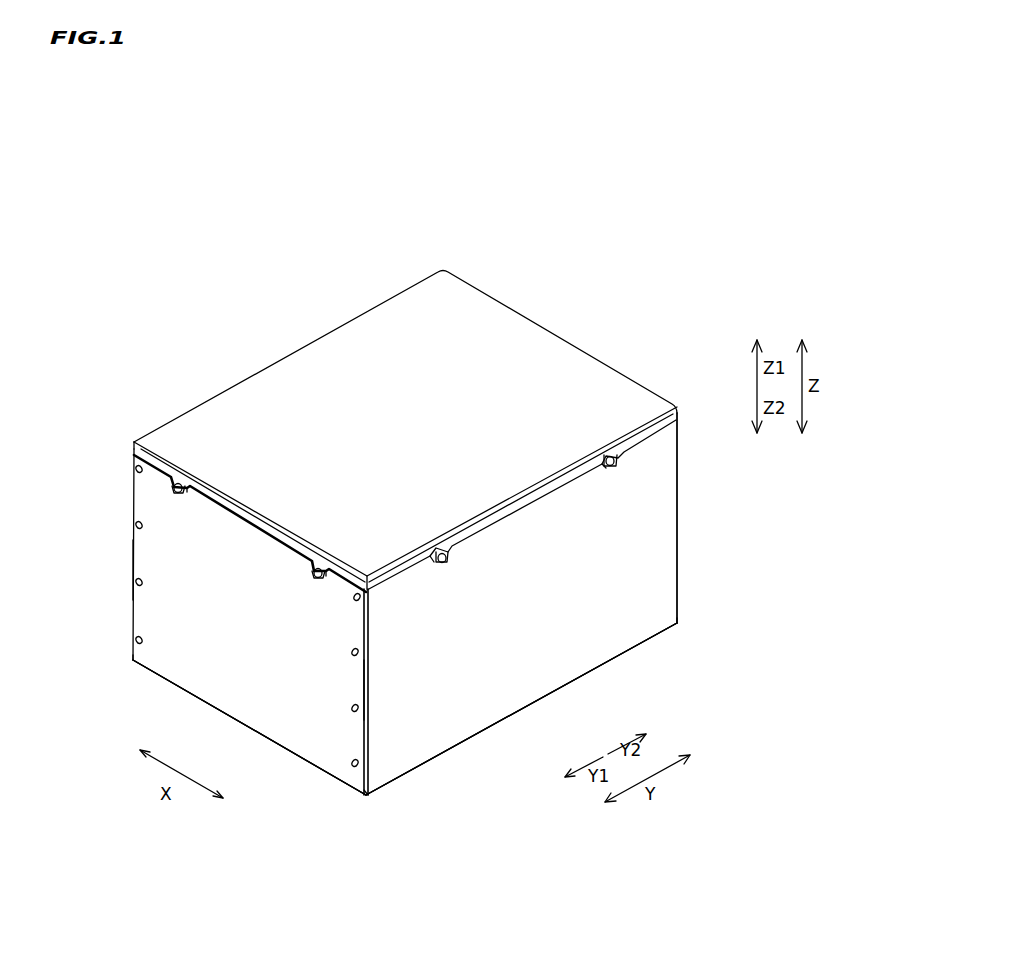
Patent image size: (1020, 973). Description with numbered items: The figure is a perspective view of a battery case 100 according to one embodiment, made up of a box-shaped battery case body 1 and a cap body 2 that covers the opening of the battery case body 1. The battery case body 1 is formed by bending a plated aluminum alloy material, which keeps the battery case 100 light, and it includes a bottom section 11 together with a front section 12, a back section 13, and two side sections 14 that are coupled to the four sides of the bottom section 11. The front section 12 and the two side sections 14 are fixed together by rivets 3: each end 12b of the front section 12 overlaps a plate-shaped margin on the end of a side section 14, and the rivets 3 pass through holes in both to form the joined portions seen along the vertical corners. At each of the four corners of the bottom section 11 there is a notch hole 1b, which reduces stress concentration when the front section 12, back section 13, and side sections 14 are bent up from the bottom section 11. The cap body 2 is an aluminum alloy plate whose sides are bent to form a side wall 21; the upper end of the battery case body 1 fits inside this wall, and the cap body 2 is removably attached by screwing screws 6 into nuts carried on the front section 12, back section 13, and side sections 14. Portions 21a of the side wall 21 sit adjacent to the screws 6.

The battery case 100 is at (675, 318).
The battery case body 1 is at (722, 503).
The cap body 2 is at (543, 350).
The rivet 3 is at (136, 472).
The screw 6 is at (176, 494).
The bottom section 11 is at (470, 740).
The front section 12 is at (215, 697).
The end of the front section 12b is at (131, 560).
The back section 13 is at (677, 458).
The side section 14 is at (596, 640).
The notch hole 1b is at (132, 663).
The side wall 21 is at (262, 522).
The bracket engaging portion 21a is at (188, 494).